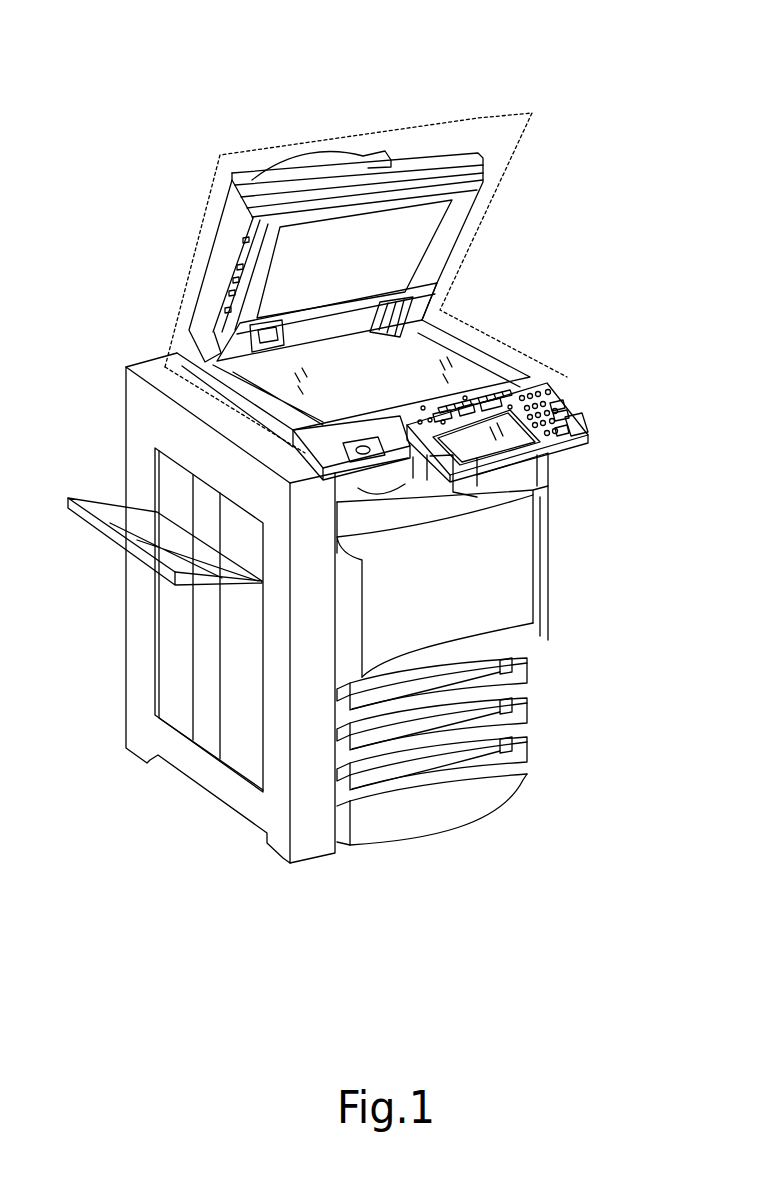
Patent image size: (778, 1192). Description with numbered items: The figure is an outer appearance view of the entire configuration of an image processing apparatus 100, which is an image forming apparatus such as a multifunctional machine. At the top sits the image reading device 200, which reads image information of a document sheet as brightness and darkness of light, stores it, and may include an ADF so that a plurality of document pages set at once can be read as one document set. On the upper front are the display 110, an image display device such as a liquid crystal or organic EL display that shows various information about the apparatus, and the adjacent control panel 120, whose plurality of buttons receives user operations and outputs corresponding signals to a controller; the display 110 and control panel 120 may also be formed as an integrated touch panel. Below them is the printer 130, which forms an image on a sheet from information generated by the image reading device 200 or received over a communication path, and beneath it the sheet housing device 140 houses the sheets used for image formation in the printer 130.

The image processing apparatus 100 is at (375, 83).
The image reading device 200 is at (478, 118).
The display 110 is at (510, 408).
The control panel 120 is at (577, 412).
The printer 130 is at (515, 605).
The sheet housing device 140 is at (538, 650).